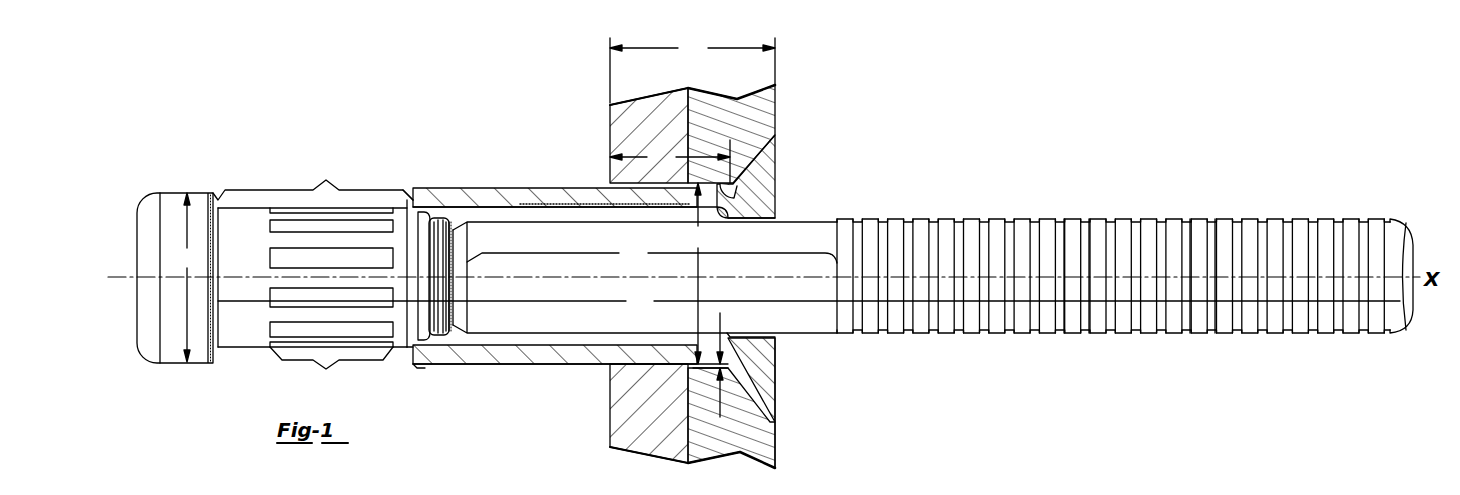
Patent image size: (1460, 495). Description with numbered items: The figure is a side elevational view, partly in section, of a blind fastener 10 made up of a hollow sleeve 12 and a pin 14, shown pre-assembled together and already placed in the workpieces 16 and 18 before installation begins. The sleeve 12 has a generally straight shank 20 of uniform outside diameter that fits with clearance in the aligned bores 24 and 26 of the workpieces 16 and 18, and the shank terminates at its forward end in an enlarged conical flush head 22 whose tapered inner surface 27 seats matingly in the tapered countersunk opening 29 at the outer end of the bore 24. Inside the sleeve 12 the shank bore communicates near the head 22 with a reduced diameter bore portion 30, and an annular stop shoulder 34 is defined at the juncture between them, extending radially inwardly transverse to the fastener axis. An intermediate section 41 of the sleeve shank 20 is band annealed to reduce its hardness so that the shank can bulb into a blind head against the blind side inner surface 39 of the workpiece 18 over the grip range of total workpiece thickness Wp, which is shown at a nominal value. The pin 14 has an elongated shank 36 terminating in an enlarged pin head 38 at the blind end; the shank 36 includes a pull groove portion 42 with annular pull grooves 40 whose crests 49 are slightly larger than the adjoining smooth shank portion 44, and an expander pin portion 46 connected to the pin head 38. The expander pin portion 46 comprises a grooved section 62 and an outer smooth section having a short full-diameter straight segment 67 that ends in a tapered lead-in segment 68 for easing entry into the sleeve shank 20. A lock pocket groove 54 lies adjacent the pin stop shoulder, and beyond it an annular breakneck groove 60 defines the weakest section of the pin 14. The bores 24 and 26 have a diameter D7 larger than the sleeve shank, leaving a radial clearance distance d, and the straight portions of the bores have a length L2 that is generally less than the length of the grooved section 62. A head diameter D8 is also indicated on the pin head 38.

The blind fastener 10 is at (252, 379).
The hollow sleeve 12 is at (467, 378).
The pin 14 is at (181, 377).
The workpiece 16 is at (753, 118).
The workpiece 18 is at (652, 112).
The sleeve shank 20 is at (486, 198).
The enlarged head 22 is at (762, 176).
The bore 24 is at (745, 205).
The bore 26 is at (600, 190).
The tapered inner surface 27 is at (762, 430).
The tapered countersunk opening 29 is at (750, 377).
The reduced diameter bore portion 30 is at (764, 334).
The annular stop shoulder 34 is at (724, 218).
The shank 36 is at (809, 302).
The pin head 38 is at (170, 193).
The inner surface 39 is at (613, 423).
The pull grooves 40 is at (1157, 212).
The intermediate section 41 is at (502, 366).
The pull groove portion 42 is at (835, 348).
The smooth shank portion 44 is at (652, 253).
The expander pin portion 46 is at (313, 248).
The crests 49 is at (1225, 219).
The lock pocket groove 54 is at (428, 214).
The breakneck groove 60 is at (452, 227).
The grooved section 62 is at (331, 372).
The straight segment 67 is at (400, 348).
The tapered lead-in segment 68 is at (413, 345).
The diameter of workpiece bores D7 is at (702, 273).
The head diameter D8 is at (190, 277).
The radial clearance distance d is at (727, 361).
The length of the straight portions of workpiece bores L2 is at (670, 161).
The total thickness of the workpieces Wp is at (692, 70).